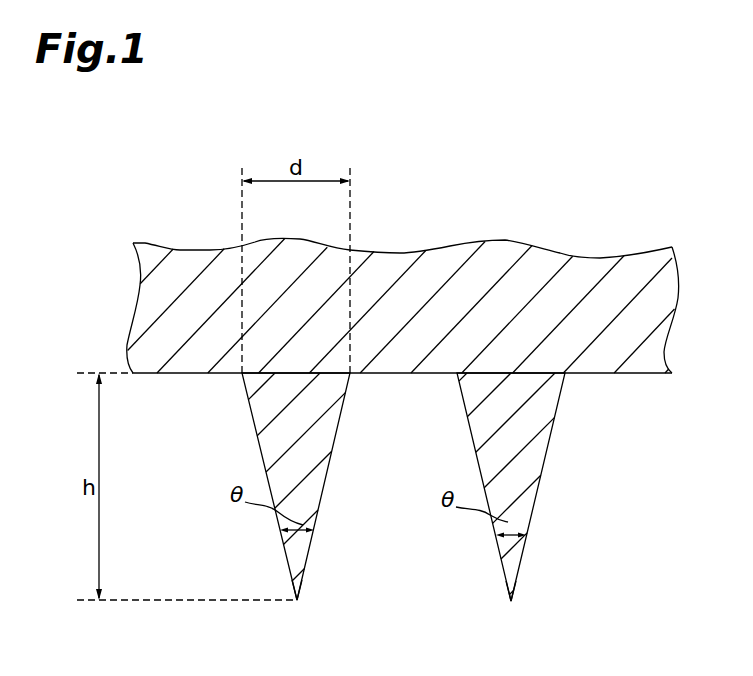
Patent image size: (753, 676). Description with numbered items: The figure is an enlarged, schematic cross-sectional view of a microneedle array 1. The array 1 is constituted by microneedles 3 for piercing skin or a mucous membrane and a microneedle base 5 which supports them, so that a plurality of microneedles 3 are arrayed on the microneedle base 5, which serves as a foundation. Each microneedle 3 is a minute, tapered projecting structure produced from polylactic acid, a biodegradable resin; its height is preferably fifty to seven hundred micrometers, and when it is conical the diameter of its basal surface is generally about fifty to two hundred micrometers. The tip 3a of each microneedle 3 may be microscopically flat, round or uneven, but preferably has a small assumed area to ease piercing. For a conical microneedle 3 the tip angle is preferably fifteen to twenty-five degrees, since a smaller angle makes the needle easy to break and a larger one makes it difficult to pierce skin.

The microneedle array 1 is at (591, 180).
The microneedle base 5 is at (625, 362).
The microneedle 3 is at (320, 462).
The tip 3a is at (297, 600).